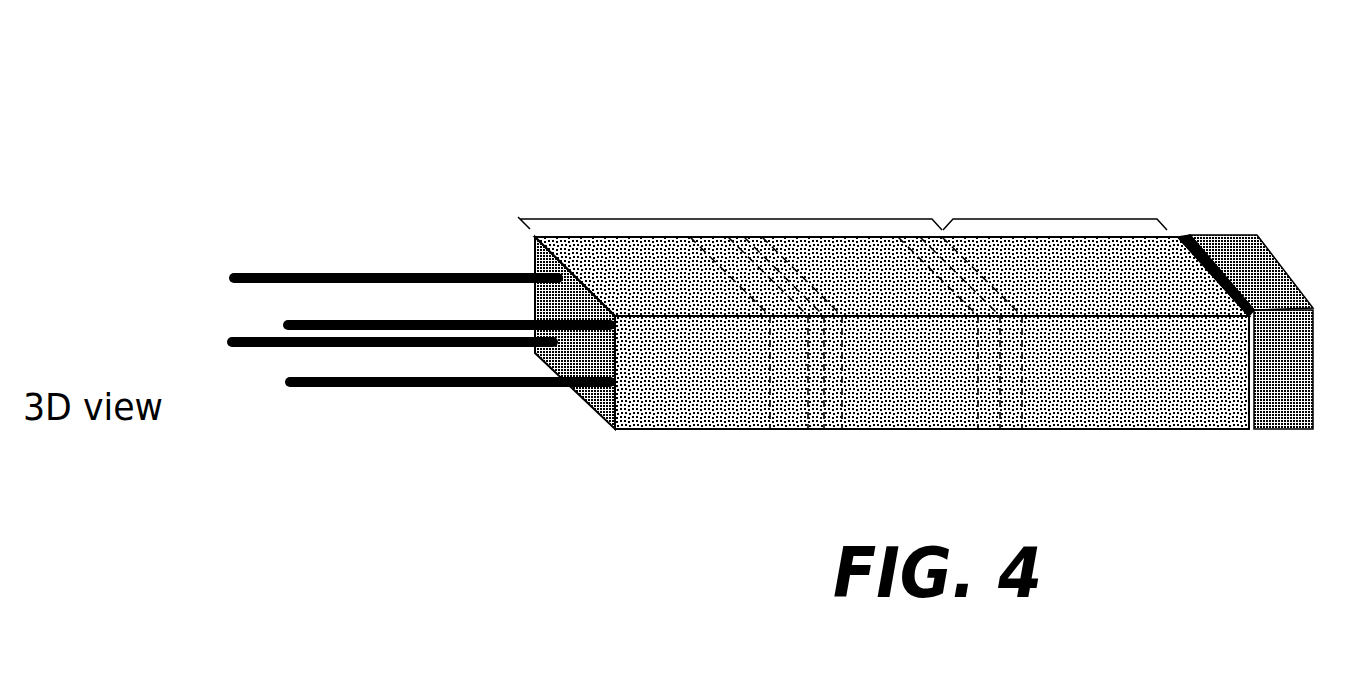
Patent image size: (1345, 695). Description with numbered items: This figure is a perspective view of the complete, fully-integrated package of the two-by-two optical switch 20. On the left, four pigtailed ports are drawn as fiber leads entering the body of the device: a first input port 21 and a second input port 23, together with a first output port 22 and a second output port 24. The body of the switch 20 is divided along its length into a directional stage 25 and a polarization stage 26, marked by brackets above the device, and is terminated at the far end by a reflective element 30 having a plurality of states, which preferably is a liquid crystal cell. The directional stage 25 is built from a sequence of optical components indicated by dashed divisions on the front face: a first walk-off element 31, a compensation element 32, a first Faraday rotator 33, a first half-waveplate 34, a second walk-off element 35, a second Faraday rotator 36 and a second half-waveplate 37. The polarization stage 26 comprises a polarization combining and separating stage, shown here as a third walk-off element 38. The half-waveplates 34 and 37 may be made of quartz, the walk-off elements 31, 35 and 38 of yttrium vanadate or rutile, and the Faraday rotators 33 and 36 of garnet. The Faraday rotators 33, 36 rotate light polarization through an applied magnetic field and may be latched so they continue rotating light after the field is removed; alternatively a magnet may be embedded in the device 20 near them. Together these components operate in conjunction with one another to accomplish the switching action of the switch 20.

The optical switch 20 is at (1192, 99).
The pigtailed port I1 21 is at (333, 274).
The pigtailed port O1 22 is at (347, 387).
The pigtailed port I2 23 is at (323, 318).
The pigtailed port O2 24 is at (408, 347).
The directional stage 25 is at (733, 220).
The polarization stage 26 is at (1050, 218).
The reflective element 30 is at (1236, 240).
The first walk-off element 31 is at (672, 392).
The compensation element 32 is at (773, 387).
The first Faraday rotator 33 is at (817, 377).
The first half-waveplate 34 is at (827, 370).
The second walk-off element 35 is at (918, 358).
The second Faraday rotator 36 is at (990, 383).
The second half-waveplate 37 is at (1013, 363).
The third walk-off element 38 is at (1122, 377).